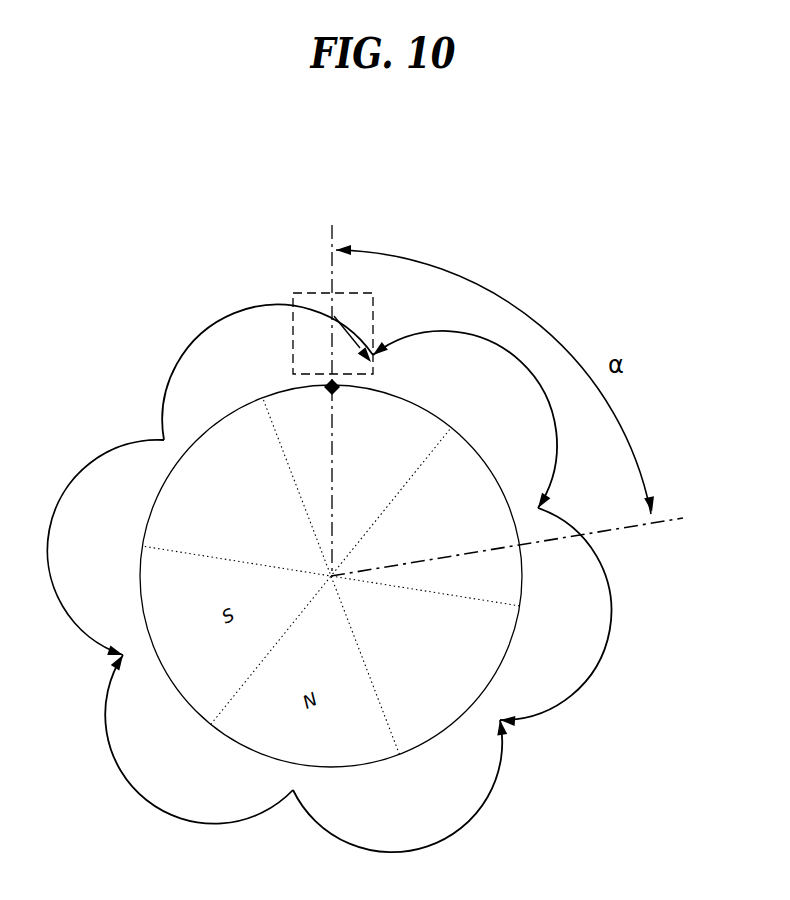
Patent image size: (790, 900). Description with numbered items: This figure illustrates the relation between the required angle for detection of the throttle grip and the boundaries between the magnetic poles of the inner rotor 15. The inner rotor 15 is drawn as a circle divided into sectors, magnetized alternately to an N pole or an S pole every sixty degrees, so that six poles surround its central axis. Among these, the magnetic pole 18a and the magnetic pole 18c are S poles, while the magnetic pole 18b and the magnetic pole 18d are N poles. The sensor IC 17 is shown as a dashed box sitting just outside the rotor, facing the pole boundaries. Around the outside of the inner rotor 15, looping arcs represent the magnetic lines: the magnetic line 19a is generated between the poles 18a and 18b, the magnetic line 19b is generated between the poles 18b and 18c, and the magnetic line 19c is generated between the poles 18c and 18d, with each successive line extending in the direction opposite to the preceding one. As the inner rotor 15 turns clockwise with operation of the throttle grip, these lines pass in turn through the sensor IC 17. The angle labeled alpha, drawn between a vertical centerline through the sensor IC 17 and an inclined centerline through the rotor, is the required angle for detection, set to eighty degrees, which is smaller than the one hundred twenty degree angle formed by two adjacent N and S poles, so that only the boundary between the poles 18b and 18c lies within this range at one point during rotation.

The inner rotor 15 is at (447, 728).
The sensor IC 17 is at (300, 292).
The magnetic pole 18a is at (498, 645).
The magnetic pole 18b is at (508, 580).
The magnetic pole 18c is at (432, 428).
The magnetic pole 18d is at (232, 420).
The magnetic line 19a is at (617, 580).
The magnetic line 19b is at (477, 320).
The magnetic line 19c is at (213, 315).